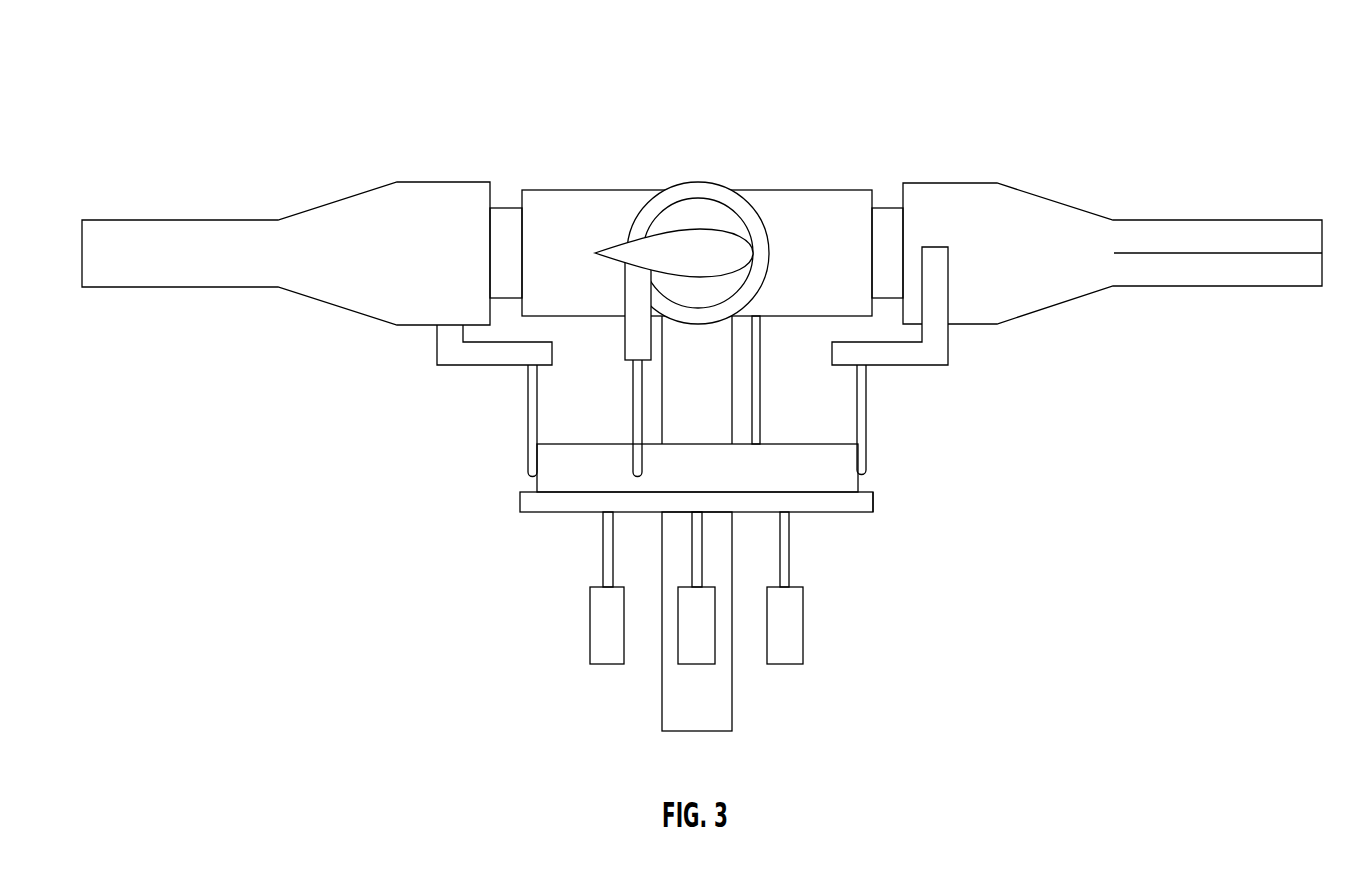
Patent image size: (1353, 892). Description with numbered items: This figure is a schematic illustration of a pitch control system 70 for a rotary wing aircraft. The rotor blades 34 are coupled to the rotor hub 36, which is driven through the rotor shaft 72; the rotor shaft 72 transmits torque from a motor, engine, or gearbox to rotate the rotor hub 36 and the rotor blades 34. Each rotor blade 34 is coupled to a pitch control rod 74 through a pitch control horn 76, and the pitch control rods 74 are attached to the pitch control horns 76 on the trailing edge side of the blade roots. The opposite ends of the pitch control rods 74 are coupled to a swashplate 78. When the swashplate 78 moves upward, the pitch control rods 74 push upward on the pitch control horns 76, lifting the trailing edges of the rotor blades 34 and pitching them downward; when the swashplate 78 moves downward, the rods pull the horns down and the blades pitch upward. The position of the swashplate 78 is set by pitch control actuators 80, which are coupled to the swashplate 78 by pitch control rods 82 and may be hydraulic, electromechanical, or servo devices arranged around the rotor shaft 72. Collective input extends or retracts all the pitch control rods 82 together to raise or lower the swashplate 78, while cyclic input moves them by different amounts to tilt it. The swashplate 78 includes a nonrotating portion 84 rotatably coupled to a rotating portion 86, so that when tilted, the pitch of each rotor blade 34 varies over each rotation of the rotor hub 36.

The rotor blade 34 is at (274, 219).
The rotor hub 36 is at (777, 213).
The pitch control system 70 is at (272, 82).
The rotor shaft 72 is at (662, 700).
The pitch control rod 74 is at (528, 388).
The pitch control horn 76 is at (437, 347).
The swashplate 78 is at (873, 500).
The pitch control actuator 80 is at (590, 627).
The pitch control rod 82 is at (603, 551).
The nonrotating portion 84 is at (520, 500).
The rotating portion 86 is at (537, 482).